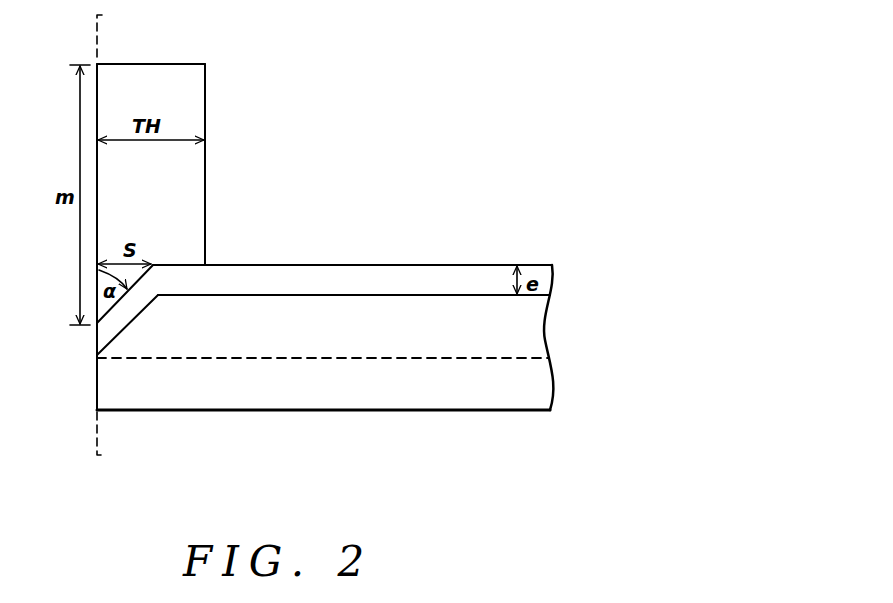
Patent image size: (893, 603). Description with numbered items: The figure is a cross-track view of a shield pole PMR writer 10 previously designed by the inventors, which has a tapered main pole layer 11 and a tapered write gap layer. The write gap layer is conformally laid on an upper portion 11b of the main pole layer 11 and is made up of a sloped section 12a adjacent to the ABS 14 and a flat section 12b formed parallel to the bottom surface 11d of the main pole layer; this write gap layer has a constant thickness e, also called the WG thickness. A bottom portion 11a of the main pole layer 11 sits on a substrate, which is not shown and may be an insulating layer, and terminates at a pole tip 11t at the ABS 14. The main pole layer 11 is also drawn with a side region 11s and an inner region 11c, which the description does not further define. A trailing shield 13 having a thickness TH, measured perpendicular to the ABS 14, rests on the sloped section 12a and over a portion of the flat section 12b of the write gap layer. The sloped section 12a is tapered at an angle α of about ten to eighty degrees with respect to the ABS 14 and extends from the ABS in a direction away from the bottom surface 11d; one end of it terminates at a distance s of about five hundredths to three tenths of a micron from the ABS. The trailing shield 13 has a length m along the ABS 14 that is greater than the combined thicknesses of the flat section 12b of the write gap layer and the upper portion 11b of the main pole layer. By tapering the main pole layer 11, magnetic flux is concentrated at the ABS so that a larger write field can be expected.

The PMR writer 10 is at (363, 145).
The main pole layer 11 is at (562, 295).
The bottom portion of the main pole layer 11a is at (318, 393).
The upper portion of the main pole layer 11b is at (425, 325).
The base inner region 11c is at (232, 297).
The bottom surface of the main pole layer 11d is at (523, 410).
The base side region 11s is at (145, 312).
The pole tip 11t is at (97, 383).
The sloped section of the write gap layer 12a is at (105, 331).
The flat section of the write gap layer 12b is at (375, 285).
The trailing shield 13 is at (183, 78).
The ABS 14 is at (120, 242).